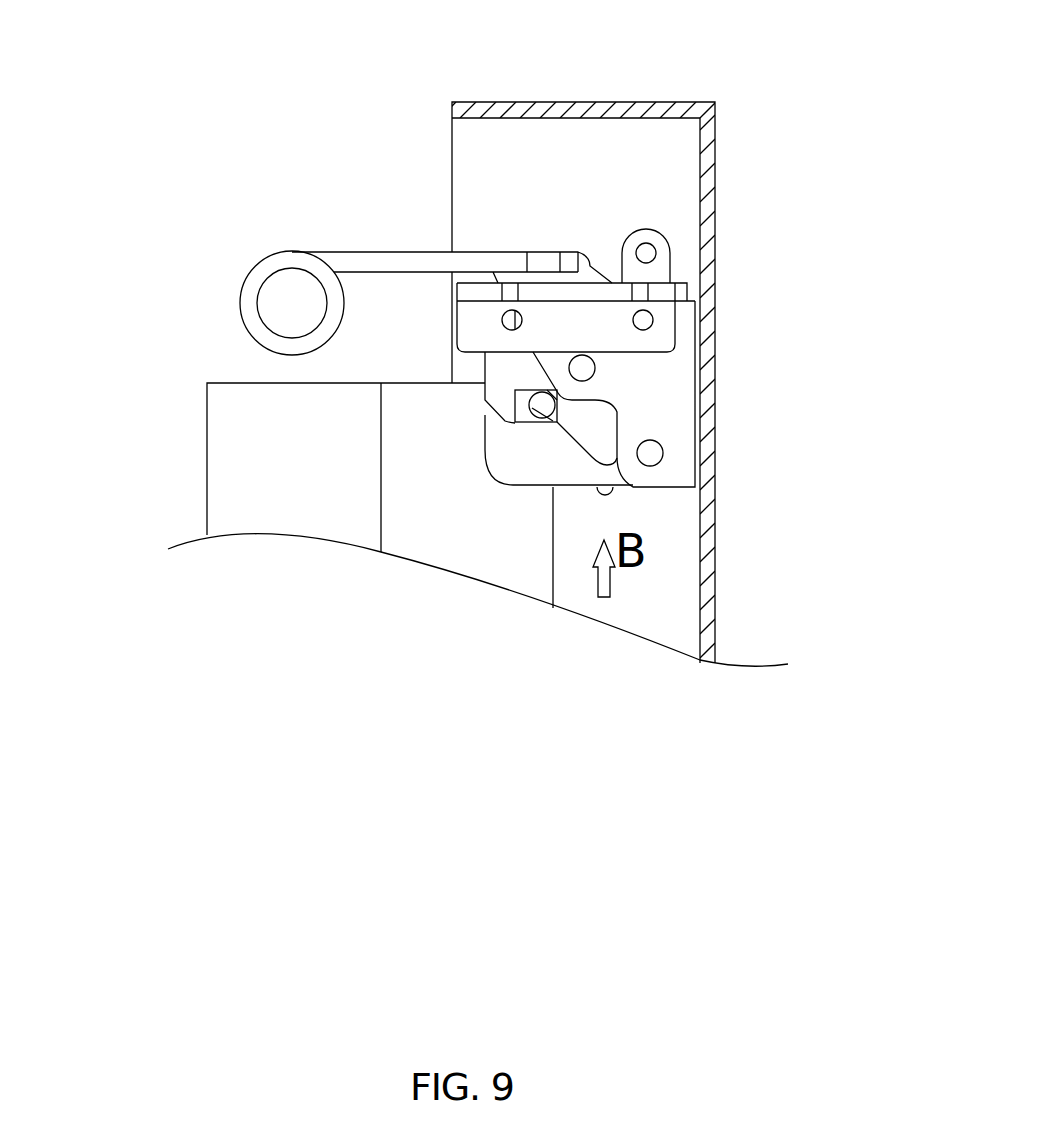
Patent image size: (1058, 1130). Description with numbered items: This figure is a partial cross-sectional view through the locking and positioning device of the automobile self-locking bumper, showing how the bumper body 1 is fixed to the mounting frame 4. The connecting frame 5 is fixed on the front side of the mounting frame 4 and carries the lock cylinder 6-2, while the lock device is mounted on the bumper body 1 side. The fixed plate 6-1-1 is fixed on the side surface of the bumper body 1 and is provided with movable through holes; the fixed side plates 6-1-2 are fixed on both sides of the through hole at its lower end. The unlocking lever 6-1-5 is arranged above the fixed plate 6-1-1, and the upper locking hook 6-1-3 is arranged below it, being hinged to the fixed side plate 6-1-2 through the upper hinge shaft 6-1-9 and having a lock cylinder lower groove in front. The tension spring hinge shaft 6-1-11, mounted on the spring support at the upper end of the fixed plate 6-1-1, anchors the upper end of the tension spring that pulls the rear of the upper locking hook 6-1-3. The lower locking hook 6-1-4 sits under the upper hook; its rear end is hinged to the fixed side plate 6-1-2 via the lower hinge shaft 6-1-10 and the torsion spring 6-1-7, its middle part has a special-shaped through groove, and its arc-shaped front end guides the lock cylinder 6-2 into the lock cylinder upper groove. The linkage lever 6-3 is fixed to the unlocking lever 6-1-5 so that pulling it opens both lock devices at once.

The bumper body 1 is at (707, 185).
The mounting frame 4 is at (275, 507).
The connecting frame 5 is at (475, 526).
The fixed plate 6-1-1 is at (593, 316).
The fixed side plate 6-1-2 is at (645, 390).
The upper locking hook 6-1-3 is at (502, 383).
The lower locking hook 6-1-4 is at (525, 473).
The unlocking lever 6-1-5 is at (385, 260).
The torsion spring 6-1-7 is at (613, 493).
The upper hinge shaft 6-1-9 is at (582, 368).
The lower hinge shaft 6-1-10 is at (650, 453).
The tension spring hinge shaft 6-1-11 is at (646, 253).
The lock cylinder 6-2 is at (542, 402).
The linkage lever 6-3 is at (288, 307).